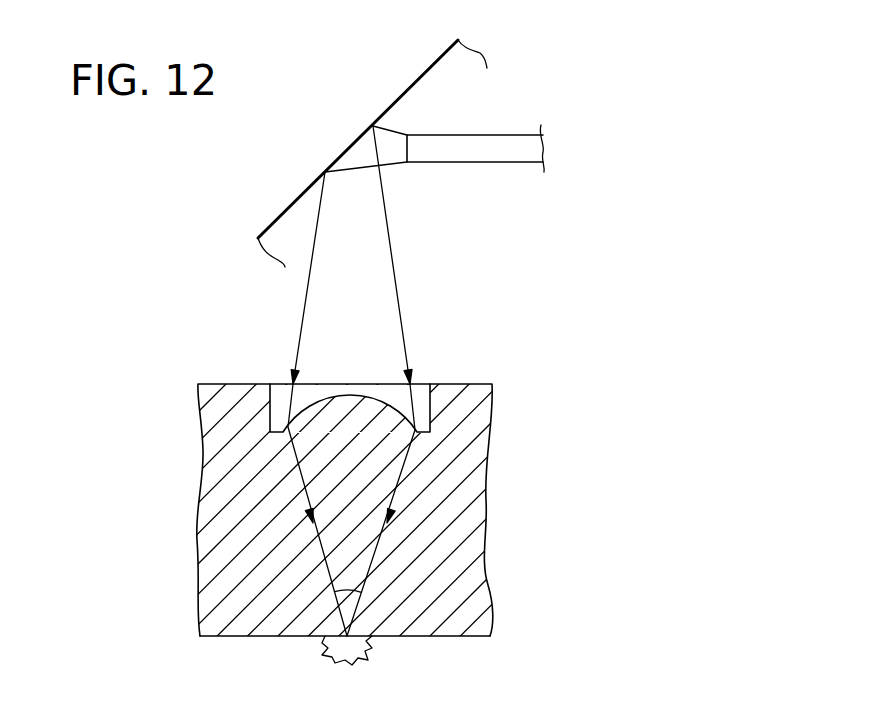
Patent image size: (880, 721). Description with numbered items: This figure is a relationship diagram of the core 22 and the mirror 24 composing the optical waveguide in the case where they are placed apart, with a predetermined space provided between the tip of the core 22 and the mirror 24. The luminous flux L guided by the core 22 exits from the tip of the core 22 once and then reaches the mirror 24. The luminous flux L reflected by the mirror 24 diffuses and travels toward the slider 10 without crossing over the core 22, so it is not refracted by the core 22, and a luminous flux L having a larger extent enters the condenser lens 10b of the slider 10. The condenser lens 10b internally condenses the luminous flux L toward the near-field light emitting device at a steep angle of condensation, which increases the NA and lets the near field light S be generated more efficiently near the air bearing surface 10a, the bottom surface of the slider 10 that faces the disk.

The slider 10 is at (475, 492).
The air bearing surface 10a is at (472, 637).
The condenser lens 10b is at (270, 408).
The core 22 is at (505, 153).
The mirror 24 is at (414, 83).
The luminous flux L is at (377, 128).
The near field light S is at (362, 658).